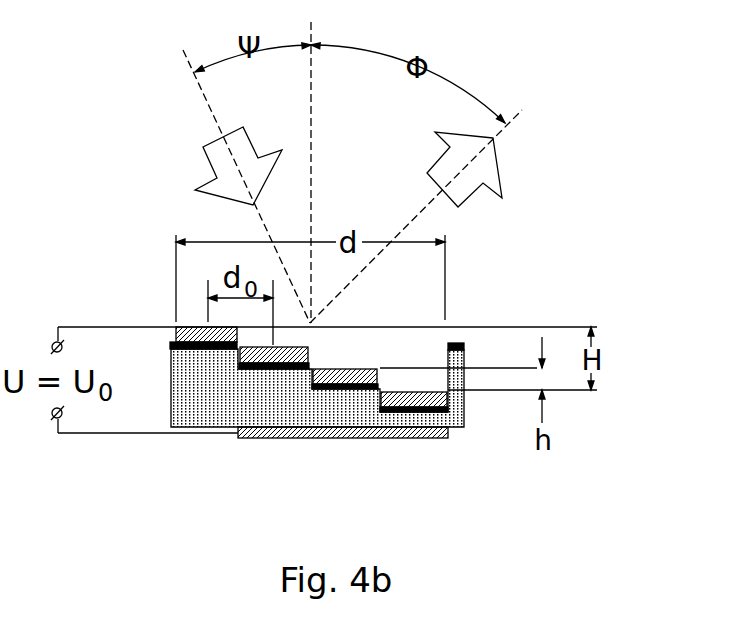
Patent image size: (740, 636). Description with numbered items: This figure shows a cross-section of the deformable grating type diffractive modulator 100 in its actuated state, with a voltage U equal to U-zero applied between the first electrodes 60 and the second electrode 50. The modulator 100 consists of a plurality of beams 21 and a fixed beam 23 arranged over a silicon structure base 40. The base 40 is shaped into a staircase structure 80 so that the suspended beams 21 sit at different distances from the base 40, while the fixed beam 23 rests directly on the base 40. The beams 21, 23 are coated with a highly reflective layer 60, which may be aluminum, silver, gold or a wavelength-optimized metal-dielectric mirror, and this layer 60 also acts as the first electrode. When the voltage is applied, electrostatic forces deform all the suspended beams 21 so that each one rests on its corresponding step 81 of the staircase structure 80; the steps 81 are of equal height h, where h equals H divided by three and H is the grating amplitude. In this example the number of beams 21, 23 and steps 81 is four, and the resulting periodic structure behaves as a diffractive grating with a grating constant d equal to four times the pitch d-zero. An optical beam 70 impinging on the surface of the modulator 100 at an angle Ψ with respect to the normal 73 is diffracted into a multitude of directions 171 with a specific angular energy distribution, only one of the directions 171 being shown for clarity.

The optical beam 70 is at (215, 157).
The normal 73 is at (311, 98).
The diffraction directions 171 is at (483, 162).
The staircase structure 80 is at (265, 345).
The highly reflective layer 60 is at (308, 304).
The silicon structure base 40 is at (180, 377).
The diffractive modulator 100 is at (165, 388).
The steps 81 is at (417, 409).
The fixed beam 23 is at (205, 360).
The suspended beams 21 is at (288, 377).
The second electrode 50 is at (385, 437).